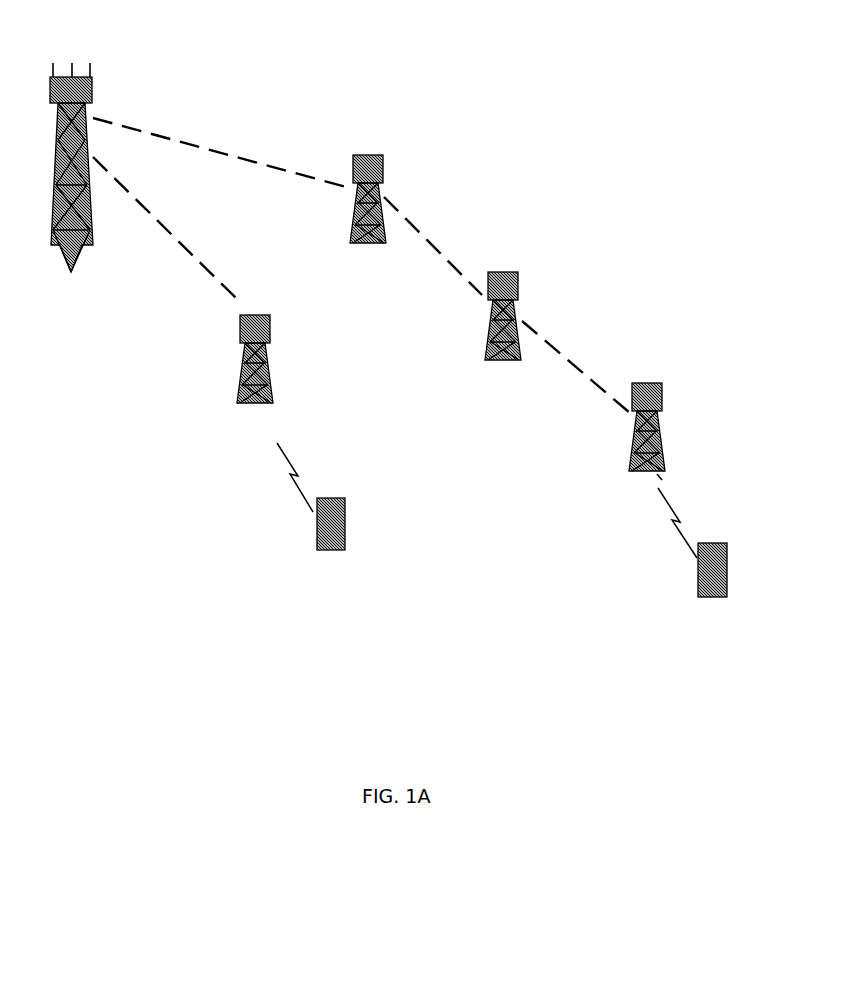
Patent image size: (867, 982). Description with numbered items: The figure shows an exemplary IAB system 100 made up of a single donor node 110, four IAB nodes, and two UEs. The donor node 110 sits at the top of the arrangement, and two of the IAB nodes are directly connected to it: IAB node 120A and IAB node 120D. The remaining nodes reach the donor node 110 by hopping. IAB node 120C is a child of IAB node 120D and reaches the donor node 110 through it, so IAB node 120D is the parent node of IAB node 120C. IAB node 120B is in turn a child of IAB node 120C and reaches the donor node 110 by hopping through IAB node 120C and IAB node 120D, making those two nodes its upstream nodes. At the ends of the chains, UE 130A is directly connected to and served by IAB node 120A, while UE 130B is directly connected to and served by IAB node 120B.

The IAB system 100 is at (652, 55).
The donor node 110 is at (92, 77).
The IAB node 120A is at (270, 317).
The IAB node 120B is at (660, 385).
The IAB node 120C is at (520, 273).
The IAB node 120D is at (382, 154).
The UE 130A is at (345, 501).
The UE 130B is at (727, 548).